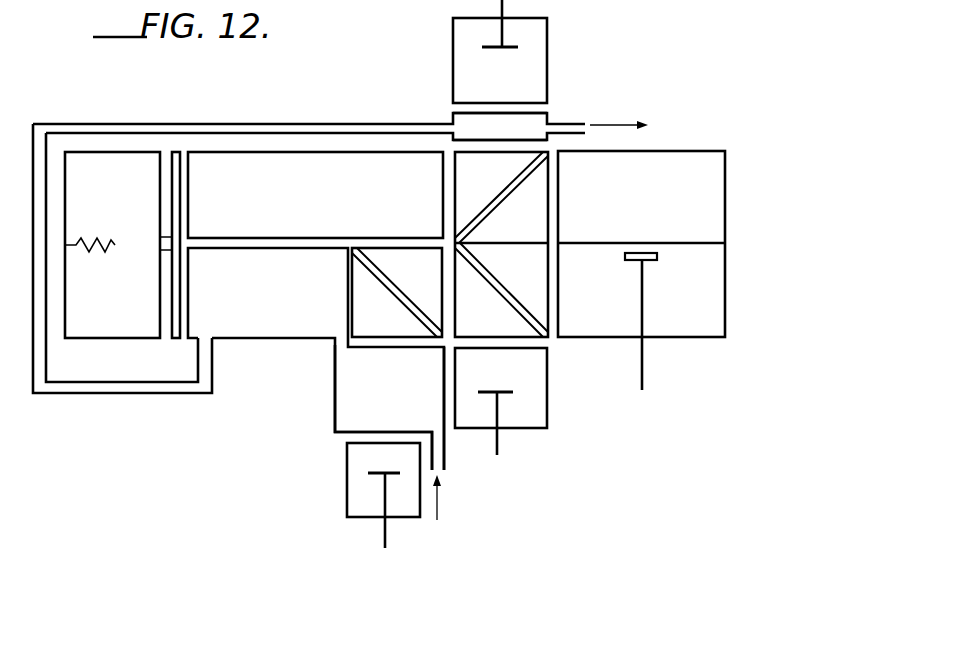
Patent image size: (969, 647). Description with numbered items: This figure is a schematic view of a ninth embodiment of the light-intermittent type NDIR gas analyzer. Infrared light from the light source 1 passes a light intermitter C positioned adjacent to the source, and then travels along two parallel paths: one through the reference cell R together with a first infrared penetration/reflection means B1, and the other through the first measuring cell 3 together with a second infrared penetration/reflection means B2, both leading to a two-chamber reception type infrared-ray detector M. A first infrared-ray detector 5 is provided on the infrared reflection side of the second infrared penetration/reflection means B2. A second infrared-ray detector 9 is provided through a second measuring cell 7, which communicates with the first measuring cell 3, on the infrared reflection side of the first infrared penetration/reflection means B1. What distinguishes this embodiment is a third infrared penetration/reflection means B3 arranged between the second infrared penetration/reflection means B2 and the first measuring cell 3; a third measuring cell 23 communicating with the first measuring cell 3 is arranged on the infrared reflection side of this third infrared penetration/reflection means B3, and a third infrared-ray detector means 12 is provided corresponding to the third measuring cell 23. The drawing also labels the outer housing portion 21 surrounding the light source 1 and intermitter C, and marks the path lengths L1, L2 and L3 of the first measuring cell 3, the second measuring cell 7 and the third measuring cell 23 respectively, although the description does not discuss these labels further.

The light source 1 is at (125, 340).
The first measuring cell 3 is at (285, 340).
The first infrared-ray detector 5 is at (548, 393).
The second measuring cell 7 is at (548, 115).
The second infrared-ray detector 9 is at (548, 40).
The third infrared-ray detector means 12 is at (347, 482).
The housing portion 21 is at (105, 395).
The third measuring cell 23 is at (337, 405).
The light intermitter C is at (175, 150).
The reference cell R is at (314, 199).
The two-chamber reception type infrared-ray detector M is at (685, 150).
The first infrared penetration/reflection means B1 is at (519, 188).
The second infrared penetration/reflection means B2 is at (517, 302).
The third infrared penetration/reflection means B3 is at (384, 278).
The distance L1 is at (345, 292).
The distance L2 is at (497, 116).
The distance L3 is at (390, 352).